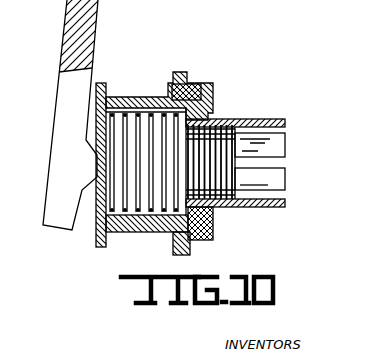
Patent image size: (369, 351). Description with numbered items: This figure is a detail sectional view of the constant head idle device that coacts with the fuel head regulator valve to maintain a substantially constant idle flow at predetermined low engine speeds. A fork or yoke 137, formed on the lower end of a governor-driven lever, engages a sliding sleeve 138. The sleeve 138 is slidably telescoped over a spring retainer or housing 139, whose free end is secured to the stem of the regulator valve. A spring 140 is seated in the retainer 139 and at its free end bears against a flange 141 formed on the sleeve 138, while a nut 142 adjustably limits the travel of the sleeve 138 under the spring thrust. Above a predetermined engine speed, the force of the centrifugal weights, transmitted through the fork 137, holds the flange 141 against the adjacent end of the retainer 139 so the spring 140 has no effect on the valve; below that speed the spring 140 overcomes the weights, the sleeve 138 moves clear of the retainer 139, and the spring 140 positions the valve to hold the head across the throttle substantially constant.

The fork or yoke 137 is at (60, 121).
The sliding sleeve 138 is at (122, 105).
The spring retainer or housing 139 is at (152, 218).
The spring 140 is at (140, 112).
The flange 141 is at (97, 213).
The nut 142 is at (187, 88).